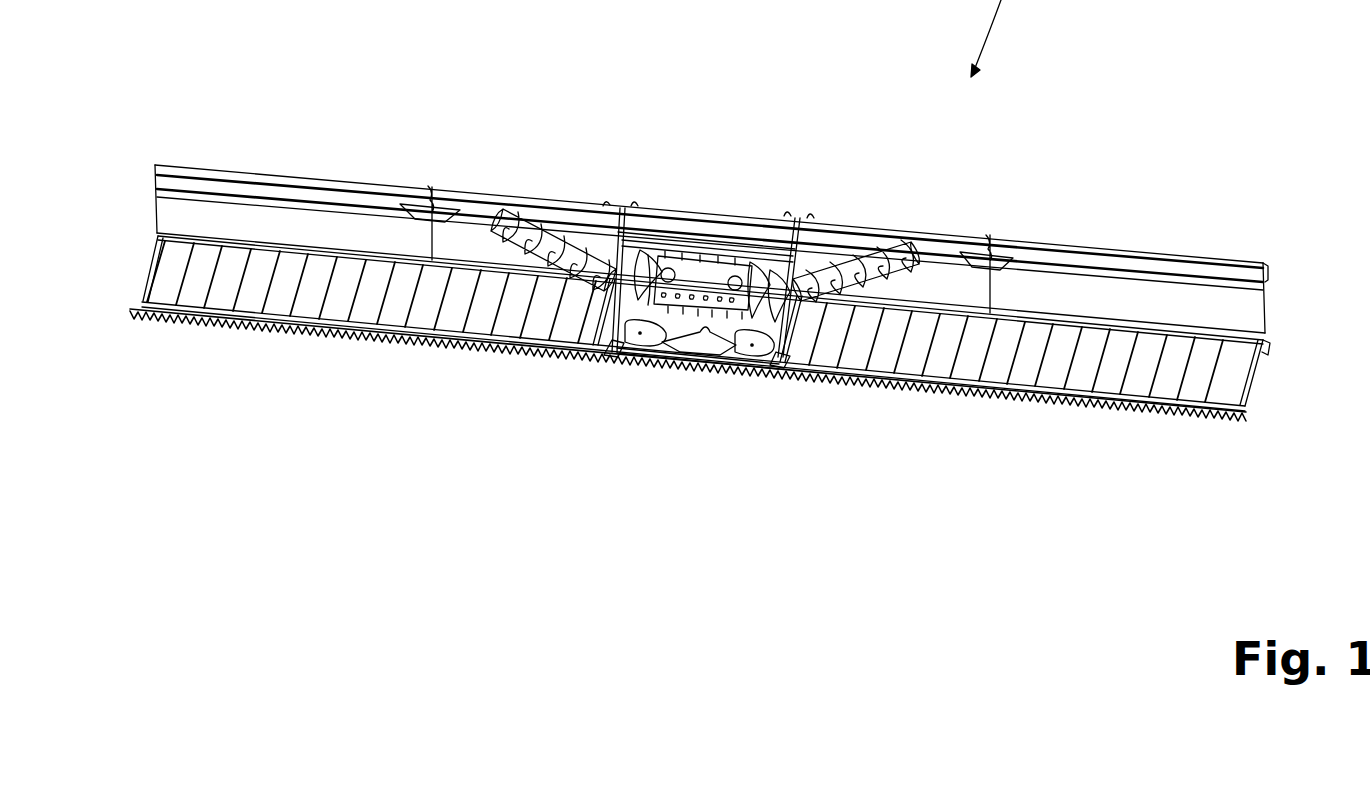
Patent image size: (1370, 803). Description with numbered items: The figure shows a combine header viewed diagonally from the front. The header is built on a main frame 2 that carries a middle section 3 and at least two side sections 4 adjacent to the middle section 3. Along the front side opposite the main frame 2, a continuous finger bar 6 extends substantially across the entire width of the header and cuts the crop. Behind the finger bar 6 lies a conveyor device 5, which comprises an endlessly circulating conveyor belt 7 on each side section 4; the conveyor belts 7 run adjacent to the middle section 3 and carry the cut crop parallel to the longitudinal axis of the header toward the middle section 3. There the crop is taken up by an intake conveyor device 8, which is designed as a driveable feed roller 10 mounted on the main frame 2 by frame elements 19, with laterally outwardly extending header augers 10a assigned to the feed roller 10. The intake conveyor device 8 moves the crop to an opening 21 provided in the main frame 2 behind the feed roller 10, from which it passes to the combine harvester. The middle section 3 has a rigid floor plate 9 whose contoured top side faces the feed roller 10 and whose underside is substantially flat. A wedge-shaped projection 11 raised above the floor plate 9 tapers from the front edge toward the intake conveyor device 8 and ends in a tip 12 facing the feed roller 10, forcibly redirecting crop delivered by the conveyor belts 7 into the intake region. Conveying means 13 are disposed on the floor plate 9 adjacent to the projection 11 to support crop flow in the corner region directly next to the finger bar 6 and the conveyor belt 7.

The main frame 2 is at (1267, 314).
The middle section 3 is at (694, 162).
The side sections 4 is at (271, 166).
The conveyor device 5 is at (143, 279).
The finger bar 6 is at (426, 353).
The conveyor belt 7 is at (252, 300).
The intake conveyor device 8 is at (680, 244).
The floor plate 9 is at (690, 331).
The feed roller 10 is at (732, 266).
The header augers 10a is at (500, 212).
The projection 11 is at (675, 350).
The tip 12 is at (707, 333).
The conveying means 13 is at (624, 367).
The frame elements 19 is at (598, 208).
The opening 21 is at (700, 250).